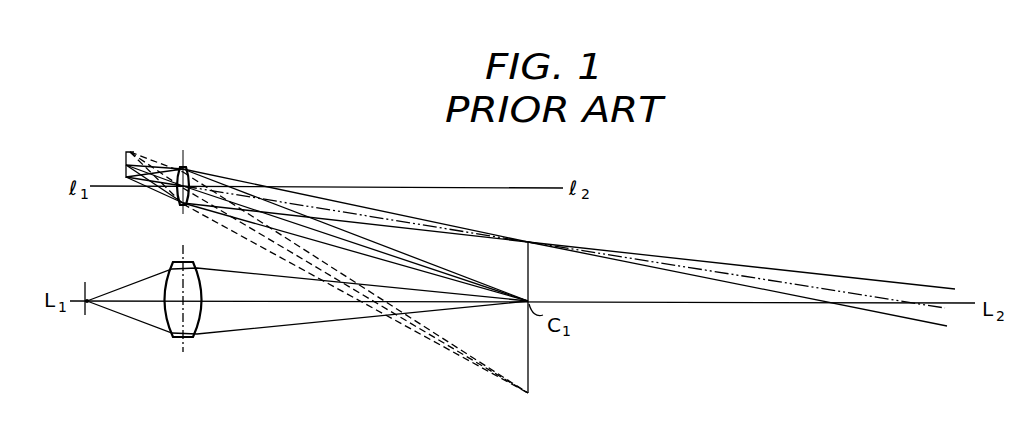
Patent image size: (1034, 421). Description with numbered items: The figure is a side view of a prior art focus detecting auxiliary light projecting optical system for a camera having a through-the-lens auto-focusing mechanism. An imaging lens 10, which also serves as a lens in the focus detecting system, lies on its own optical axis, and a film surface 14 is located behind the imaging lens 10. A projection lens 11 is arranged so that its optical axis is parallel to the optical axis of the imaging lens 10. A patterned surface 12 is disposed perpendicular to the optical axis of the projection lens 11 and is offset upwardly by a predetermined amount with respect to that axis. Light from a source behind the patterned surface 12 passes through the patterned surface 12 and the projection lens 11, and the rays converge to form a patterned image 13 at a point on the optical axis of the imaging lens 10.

The imaging lens 10 is at (171, 331).
The projection lens 11 is at (188, 168).
The patterned surface 12 is at (125, 152).
The patterned image 13 is at (529, 360).
The film surface 14 is at (86, 309).